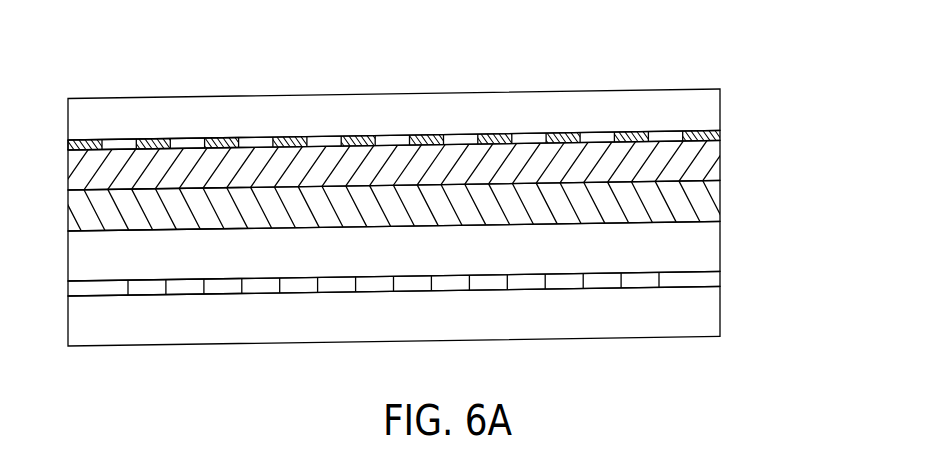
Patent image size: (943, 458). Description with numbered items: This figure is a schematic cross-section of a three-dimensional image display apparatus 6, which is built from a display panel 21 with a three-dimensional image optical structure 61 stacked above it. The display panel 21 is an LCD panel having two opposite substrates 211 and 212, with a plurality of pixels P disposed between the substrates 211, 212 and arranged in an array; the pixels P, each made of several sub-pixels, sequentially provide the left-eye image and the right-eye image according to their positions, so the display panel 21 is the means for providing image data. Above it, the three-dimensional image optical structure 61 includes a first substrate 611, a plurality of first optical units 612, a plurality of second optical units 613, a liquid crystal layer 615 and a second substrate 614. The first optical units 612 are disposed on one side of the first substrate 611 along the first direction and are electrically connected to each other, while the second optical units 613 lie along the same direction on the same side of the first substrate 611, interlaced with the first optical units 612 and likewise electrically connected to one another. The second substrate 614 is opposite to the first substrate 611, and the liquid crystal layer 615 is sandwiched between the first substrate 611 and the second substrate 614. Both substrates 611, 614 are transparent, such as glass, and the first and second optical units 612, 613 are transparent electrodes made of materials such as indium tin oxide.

The 3D image display apparatus 6 is at (93, 72).
The 3D image optical structure 61 is at (822, 70).
The first substrate 611 is at (692, 97).
The first optical units 612 is at (673, 132).
The second optical units 613 is at (718, 135).
The liquid crystal layer 615 is at (715, 158).
The second substrate 614 is at (715, 198).
The display panel 21 is at (823, 247).
The substrate 212 is at (710, 253).
The pixels P is at (642, 282).
The substrate 211 is at (710, 311).